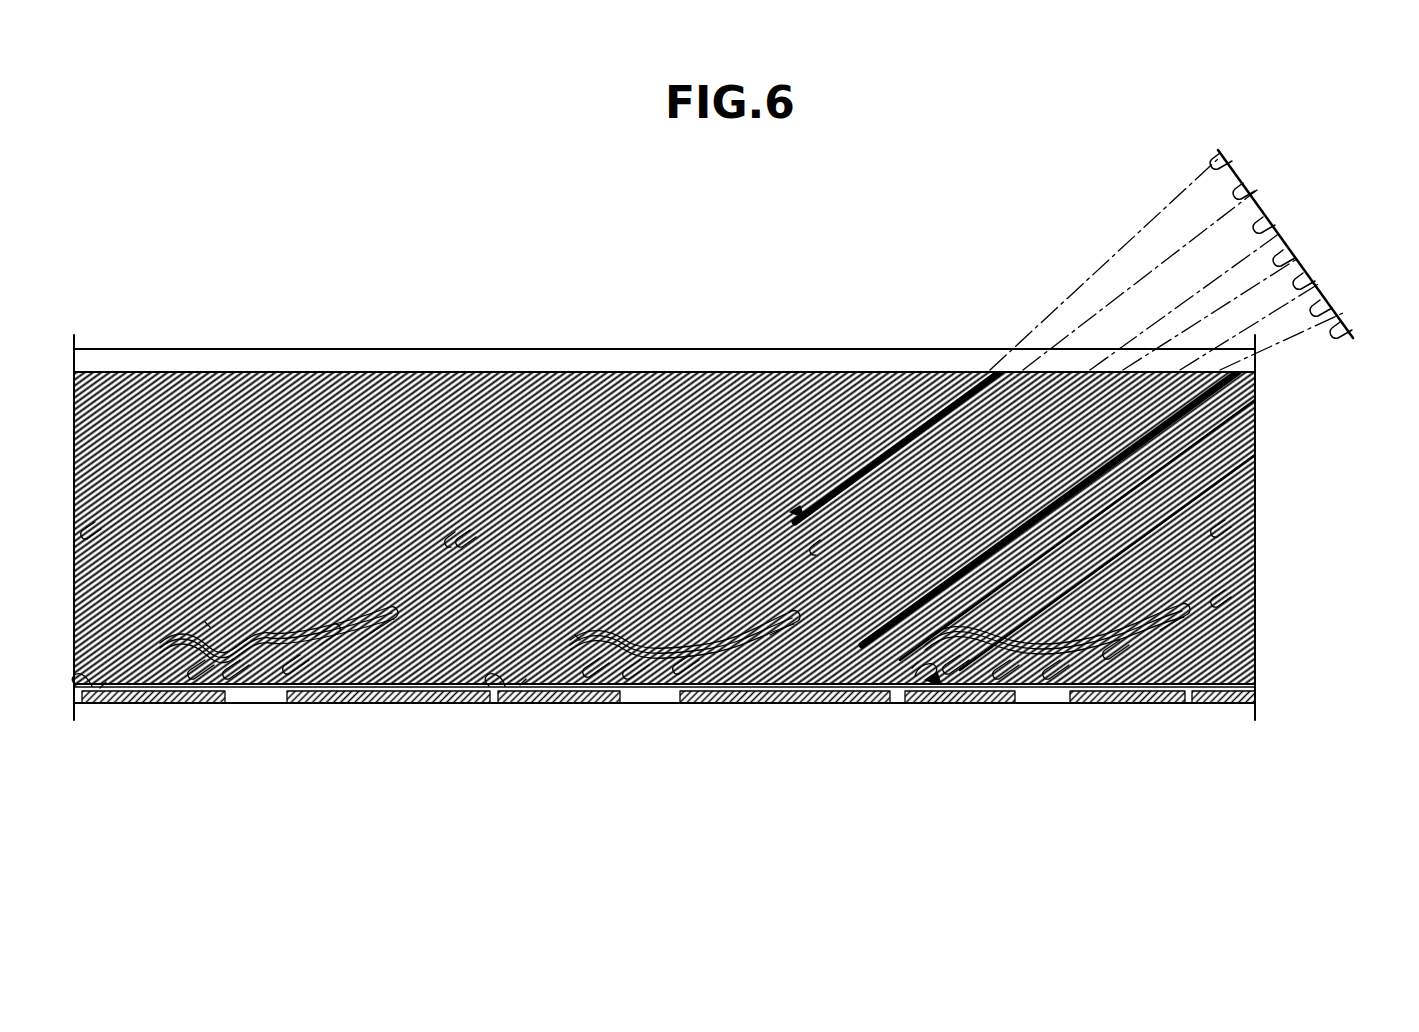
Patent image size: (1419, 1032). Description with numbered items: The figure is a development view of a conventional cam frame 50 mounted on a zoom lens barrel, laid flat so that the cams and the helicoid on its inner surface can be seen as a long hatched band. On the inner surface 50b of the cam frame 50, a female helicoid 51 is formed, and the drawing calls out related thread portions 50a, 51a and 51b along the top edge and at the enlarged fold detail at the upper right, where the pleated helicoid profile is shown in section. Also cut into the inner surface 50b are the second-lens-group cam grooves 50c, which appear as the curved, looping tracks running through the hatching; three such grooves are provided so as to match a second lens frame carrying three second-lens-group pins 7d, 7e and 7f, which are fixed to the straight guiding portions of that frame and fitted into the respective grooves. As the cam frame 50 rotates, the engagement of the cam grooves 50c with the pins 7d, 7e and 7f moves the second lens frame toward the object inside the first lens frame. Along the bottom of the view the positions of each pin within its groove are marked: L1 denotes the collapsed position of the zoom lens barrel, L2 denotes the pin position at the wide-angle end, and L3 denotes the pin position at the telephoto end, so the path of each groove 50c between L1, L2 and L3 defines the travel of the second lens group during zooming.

The cam frame 50 is at (481, 349).
The bellows pleat portion 50a is at (1320, 218).
The inner surface 50b is at (318, 352).
The second-lens-group cam grooves 50c is at (1230, 205).
The female helicoid 51 is at (835, 272).
The outer pleat surface 51a is at (755, 372).
The inner pleat surface 51b is at (733, 372).
The collapsed position L1 is at (90, 686).
The wide-angle end position L2 is at (210, 627).
The telephoto end position L3 is at (455, 532).
The second-lens-group pin 7d is at (100, 688).
The second-lens-group pin 7e is at (520, 685).
The second-lens-group pin 7f is at (912, 668).